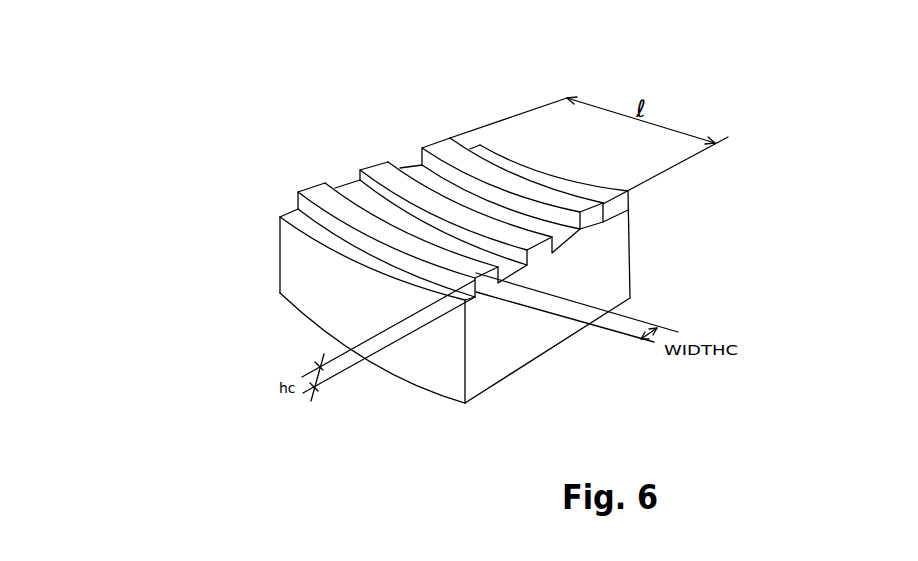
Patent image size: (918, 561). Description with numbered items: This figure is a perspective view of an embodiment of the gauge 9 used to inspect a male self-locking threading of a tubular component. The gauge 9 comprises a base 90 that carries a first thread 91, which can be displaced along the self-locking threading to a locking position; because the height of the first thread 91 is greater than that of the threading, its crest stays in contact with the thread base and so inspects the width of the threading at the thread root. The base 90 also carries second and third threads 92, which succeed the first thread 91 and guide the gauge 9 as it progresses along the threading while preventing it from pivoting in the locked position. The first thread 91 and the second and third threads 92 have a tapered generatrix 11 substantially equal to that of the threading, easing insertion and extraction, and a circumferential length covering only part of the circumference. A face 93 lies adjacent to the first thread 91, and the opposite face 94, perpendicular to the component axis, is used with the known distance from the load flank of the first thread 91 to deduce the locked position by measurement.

The gauge 9 is at (449, 266).
The tapered generatrix 11 is at (639, 198).
The base 90 is at (616, 256).
The first thread 91 is at (318, 195).
The second and third threads 92 is at (393, 178).
The face adjacent to the thread 93 is at (308, 265).
The face opposite to the face adjacent to the thread 94 is at (528, 168).